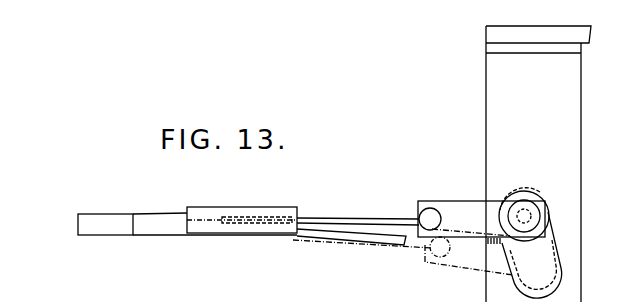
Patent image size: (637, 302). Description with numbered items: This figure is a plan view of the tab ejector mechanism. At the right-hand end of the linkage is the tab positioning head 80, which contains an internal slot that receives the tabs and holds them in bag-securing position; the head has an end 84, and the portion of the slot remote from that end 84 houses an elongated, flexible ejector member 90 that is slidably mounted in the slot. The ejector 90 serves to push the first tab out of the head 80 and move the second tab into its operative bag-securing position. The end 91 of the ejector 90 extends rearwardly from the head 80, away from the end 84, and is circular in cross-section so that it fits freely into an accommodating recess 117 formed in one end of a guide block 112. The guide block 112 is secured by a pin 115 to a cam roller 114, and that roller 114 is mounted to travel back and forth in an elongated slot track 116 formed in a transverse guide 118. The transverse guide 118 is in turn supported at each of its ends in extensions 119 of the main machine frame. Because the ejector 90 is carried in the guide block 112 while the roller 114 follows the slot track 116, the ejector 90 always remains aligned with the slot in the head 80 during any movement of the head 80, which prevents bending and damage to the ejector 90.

The tab positioning head 80 is at (200, 207).
The end 84 is at (78, 227).
The ejector member 90 is at (380, 218).
The end 91 is at (436, 218).
The guide block 112 is at (478, 203).
The cam roller 114 is at (523, 193).
The pin 115 is at (527, 213).
The elongated slot track 116 is at (512, 262).
The recess 117 is at (423, 200).
The transverse guide 118 is at (498, 76).
The extensions 119 is at (490, 35).